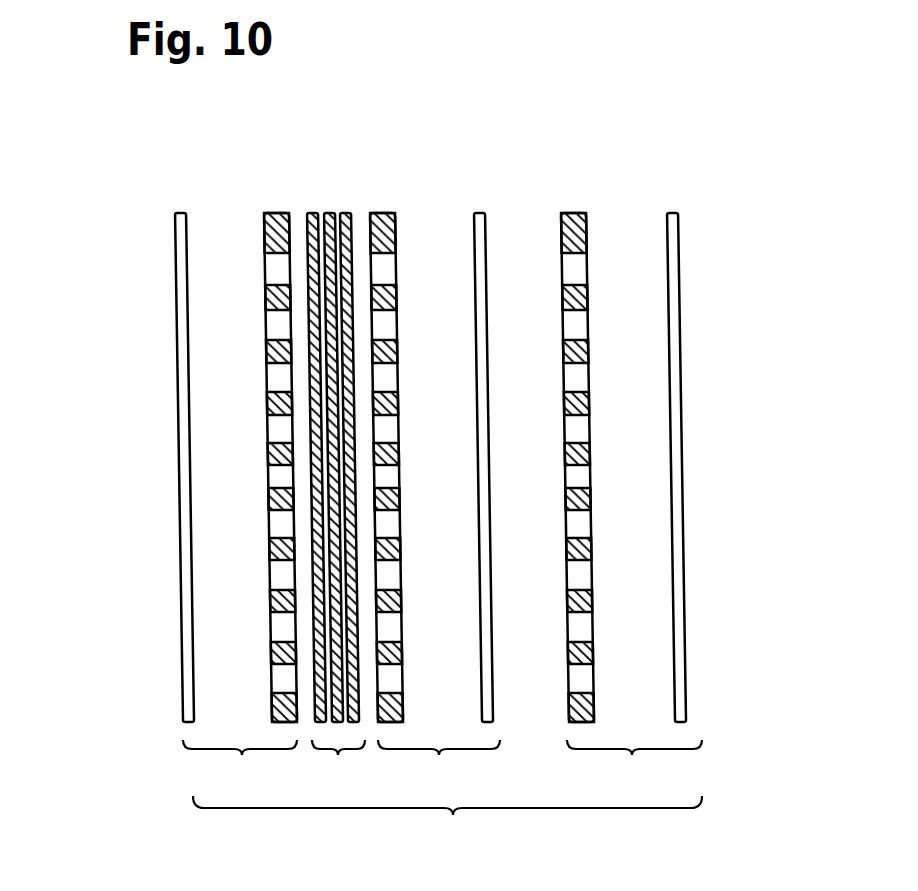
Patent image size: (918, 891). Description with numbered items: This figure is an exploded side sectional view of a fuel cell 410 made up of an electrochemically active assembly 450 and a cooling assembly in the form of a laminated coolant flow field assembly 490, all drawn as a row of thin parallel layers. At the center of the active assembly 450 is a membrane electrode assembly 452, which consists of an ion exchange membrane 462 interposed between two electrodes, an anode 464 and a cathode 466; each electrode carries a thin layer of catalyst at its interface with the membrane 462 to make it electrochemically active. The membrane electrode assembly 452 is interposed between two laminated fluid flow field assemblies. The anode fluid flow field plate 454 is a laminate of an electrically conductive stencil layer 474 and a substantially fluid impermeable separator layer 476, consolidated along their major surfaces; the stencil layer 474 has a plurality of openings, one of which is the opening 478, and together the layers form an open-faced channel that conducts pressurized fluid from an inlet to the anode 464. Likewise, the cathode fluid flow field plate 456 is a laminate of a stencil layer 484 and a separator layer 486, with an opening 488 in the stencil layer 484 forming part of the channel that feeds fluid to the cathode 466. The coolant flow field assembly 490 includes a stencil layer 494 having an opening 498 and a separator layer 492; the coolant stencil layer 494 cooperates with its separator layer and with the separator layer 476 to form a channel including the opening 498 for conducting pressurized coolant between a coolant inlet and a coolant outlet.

The fuel cell 410 is at (156, 465).
The electrochemically active assembly 450 is at (447, 824).
The membrane electrode assembly 452 is at (341, 767).
The anode fluid flow field plate 454 is at (439, 767).
The cathode fluid flow field plate 456 is at (240, 767).
The ion exchange membrane 462 is at (328, 212).
The anode 464 is at (347, 212).
The cathode 466 is at (312, 212).
The stencil layer 474 is at (382, 212).
The separator layer 476 is at (480, 212).
The opening 478 is at (388, 328).
The stencil layer 484 is at (275, 212).
The separator layer 486 is at (180, 212).
The opening 488 is at (270, 322).
The laminated coolant flow field assembly 490 is at (634, 767).
The separator layer 492 is at (673, 215).
The stencil layer 494 is at (575, 213).
The opening 498 is at (580, 323).